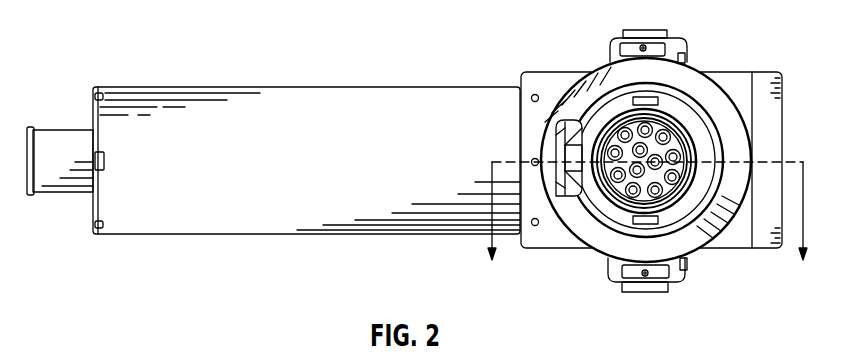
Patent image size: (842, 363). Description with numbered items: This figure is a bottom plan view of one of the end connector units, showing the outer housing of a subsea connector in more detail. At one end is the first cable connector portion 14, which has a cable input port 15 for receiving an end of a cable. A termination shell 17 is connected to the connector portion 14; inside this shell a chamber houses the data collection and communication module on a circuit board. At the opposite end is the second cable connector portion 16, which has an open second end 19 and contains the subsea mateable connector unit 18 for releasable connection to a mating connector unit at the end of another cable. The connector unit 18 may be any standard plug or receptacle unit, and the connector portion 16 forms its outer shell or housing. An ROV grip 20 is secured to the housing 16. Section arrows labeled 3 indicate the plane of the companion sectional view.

The section line 3- 3 is at (648, 230).
The first cable connector portion 14 is at (285, 95).
The cable input port 15 is at (73, 138).
The second cable connector portion 16 is at (666, 68).
The termination shell 17 is at (553, 248).
The subsea mateable connector unit 18 is at (670, 190).
The open second end 19 is at (668, 92).
The ROV grip 20 is at (645, 292).